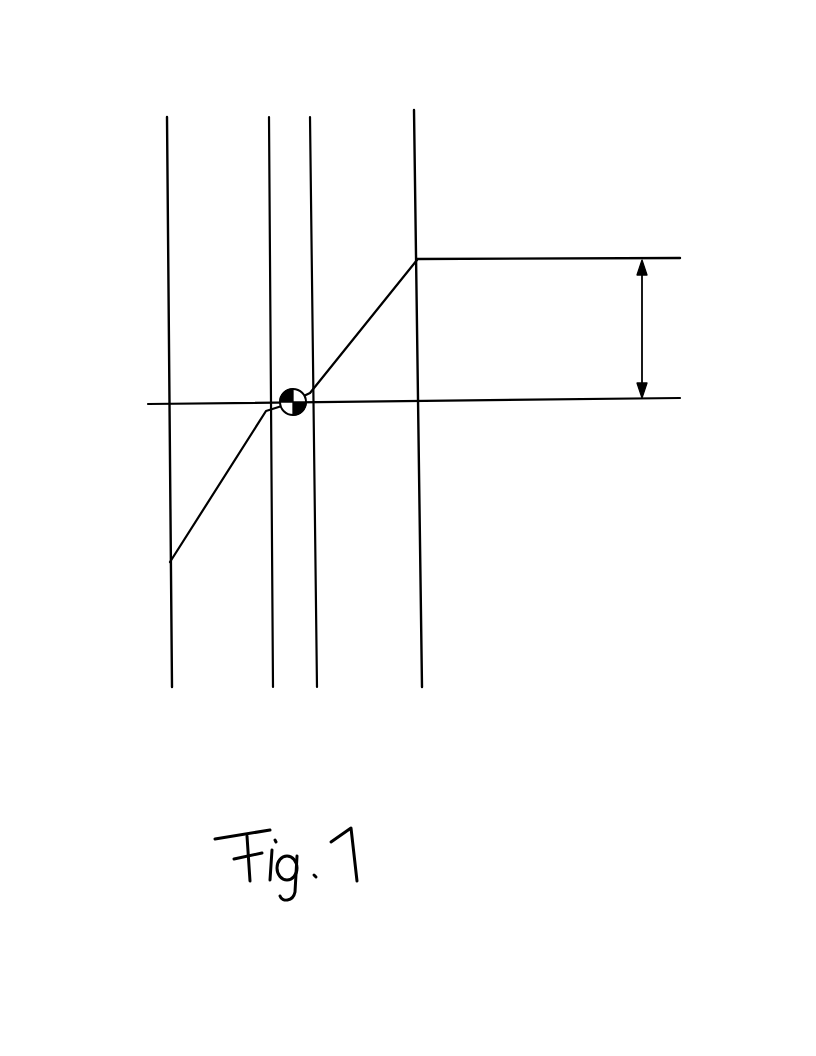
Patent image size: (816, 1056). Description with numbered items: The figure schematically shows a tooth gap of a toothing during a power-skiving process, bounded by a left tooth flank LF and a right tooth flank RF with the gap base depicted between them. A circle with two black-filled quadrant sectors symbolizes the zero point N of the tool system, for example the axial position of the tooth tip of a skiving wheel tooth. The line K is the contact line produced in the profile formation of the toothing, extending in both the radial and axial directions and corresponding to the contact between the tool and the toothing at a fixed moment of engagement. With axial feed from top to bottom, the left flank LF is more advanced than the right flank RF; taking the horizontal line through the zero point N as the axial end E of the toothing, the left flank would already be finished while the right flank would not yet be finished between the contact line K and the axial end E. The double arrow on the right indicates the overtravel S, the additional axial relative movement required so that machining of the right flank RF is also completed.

The left tooth flank LF is at (202, 117).
The right tooth flank RF is at (369, 124).
The zero point N is at (293, 378).
The contact line K is at (203, 477).
The axial end E is at (542, 405).
The overtravel S is at (656, 325).